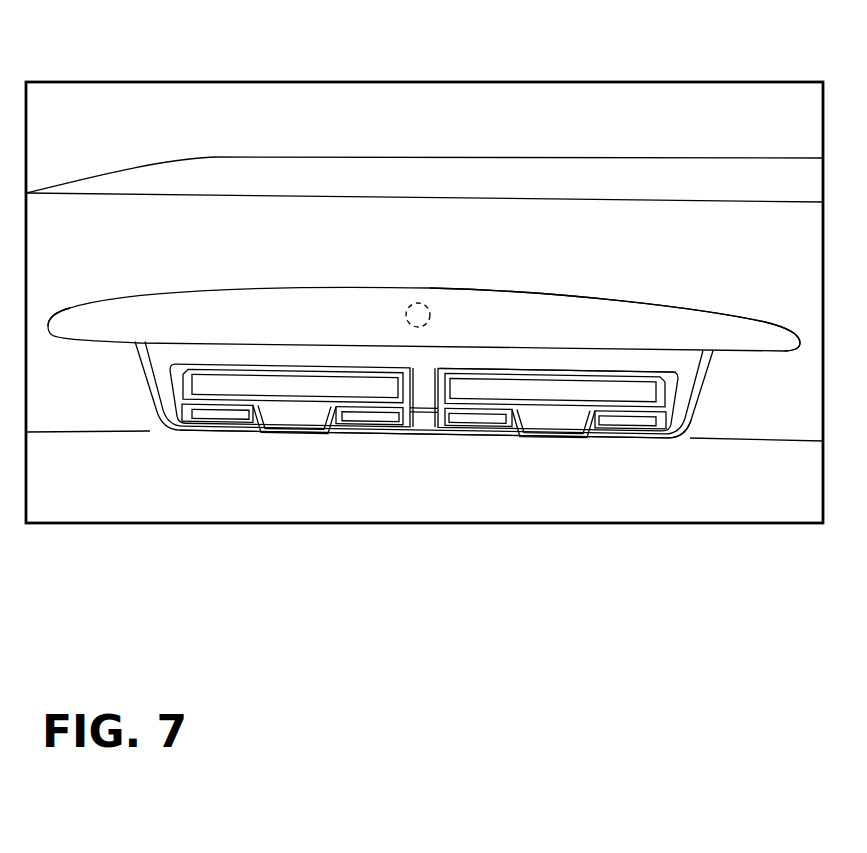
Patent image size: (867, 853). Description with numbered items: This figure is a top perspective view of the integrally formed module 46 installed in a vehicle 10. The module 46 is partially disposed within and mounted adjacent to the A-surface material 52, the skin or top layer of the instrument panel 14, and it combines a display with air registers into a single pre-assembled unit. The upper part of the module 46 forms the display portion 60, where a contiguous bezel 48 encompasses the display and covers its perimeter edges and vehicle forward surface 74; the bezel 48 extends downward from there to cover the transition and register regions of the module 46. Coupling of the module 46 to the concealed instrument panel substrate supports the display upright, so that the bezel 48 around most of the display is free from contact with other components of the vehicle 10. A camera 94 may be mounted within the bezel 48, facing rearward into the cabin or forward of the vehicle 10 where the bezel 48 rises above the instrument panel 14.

The vehicle 10 is at (384, 68).
The instrument panel 14 is at (766, 264).
The module 46 is at (536, 286).
The bezel 48 is at (760, 340).
The A-surface material 52 is at (808, 497).
The display portion 60 is at (73, 324).
The vehicle forward surface 74 is at (321, 311).
The camera 94 is at (420, 303).